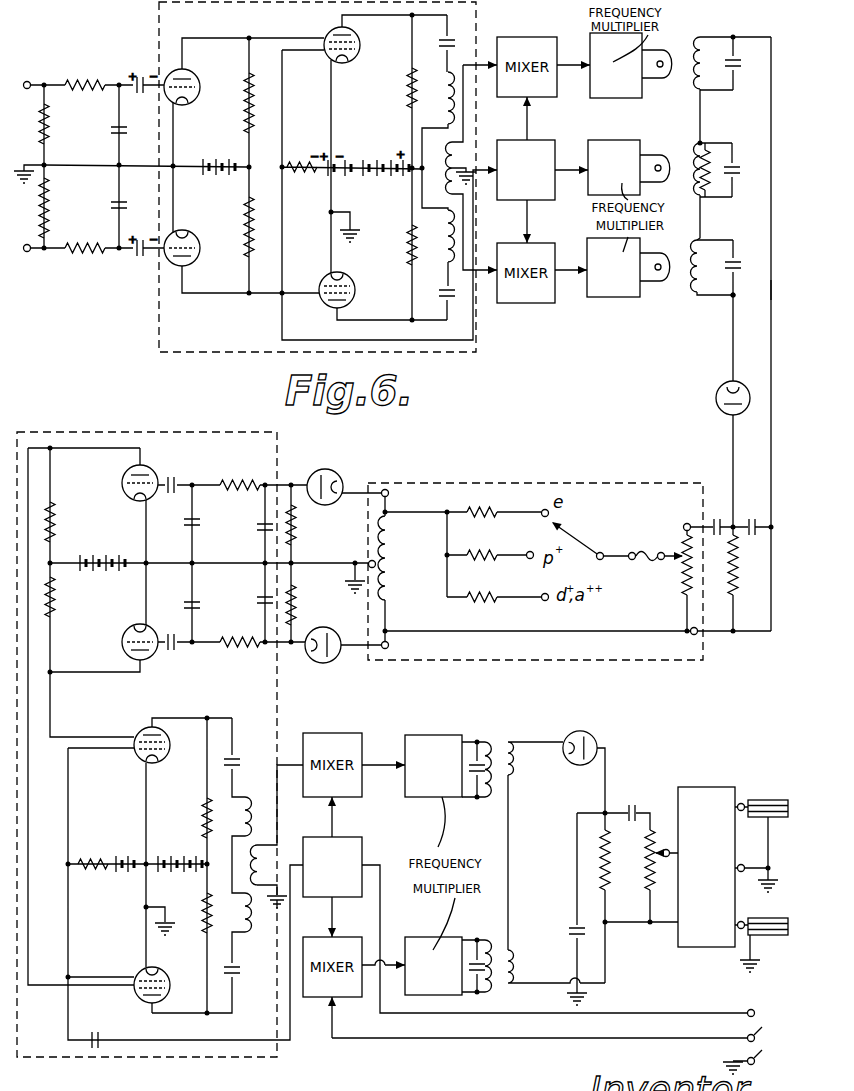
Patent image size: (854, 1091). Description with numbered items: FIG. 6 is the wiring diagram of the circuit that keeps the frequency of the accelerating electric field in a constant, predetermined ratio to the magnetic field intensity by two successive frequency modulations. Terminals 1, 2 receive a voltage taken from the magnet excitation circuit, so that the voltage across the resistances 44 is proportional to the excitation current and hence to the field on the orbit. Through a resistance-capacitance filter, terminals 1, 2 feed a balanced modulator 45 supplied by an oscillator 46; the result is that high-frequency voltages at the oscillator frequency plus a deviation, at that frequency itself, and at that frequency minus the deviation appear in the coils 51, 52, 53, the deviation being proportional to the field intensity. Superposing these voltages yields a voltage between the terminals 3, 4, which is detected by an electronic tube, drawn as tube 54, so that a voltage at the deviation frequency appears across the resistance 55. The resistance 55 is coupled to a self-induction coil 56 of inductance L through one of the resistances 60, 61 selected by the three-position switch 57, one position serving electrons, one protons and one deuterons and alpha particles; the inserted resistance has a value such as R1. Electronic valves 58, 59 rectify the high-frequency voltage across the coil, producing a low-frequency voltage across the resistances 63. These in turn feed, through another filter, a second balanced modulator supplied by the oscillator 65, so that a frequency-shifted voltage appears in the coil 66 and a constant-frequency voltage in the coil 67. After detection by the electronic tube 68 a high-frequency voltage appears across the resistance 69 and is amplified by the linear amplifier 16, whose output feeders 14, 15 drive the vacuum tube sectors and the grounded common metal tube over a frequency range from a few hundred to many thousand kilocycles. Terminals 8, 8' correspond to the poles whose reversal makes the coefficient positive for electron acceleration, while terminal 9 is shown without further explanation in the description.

The terminal 1 is at (32, 78).
The terminal 2 is at (24, 261).
The terminal 3 is at (747, 299).
The terminal 4 is at (767, 294).
The resistances 44 is at (47, 139).
The balanced modulator 45 is at (175, 15).
The oscillator 46 is at (526, 170).
The coil 51 is at (732, 89).
The coil 52 is at (707, 173).
The coil 53 is at (716, 269).
The rectifier tube 54 is at (718, 393).
The resistance 55 is at (682, 572).
The self-induction coil 56 is at (391, 541).
The switch 57 is at (573, 550).
The electronic valve 58 is at (338, 478).
The electronic valve 59 is at (338, 662).
The resistance 60 is at (498, 501).
The resistance 61 is at (490, 543).
The resistances 63 is at (293, 527).
The oscillator 65 is at (332, 867).
The coil 66 is at (535, 759).
The coil 67 is at (522, 964).
The electronic tube 68 is at (591, 735).
The resistance 69 is at (652, 889).
The feeder 14 is at (769, 800).
The feeder 15 is at (780, 914).
The linear amplifier 16 is at (716, 861).
The pole 8 is at (762, 1026).
The pole 8' is at (752, 1060).
The terminal 9 is at (758, 1002).
The inductance L is at (397, 558).
The resistance value R1 is at (618, 860).